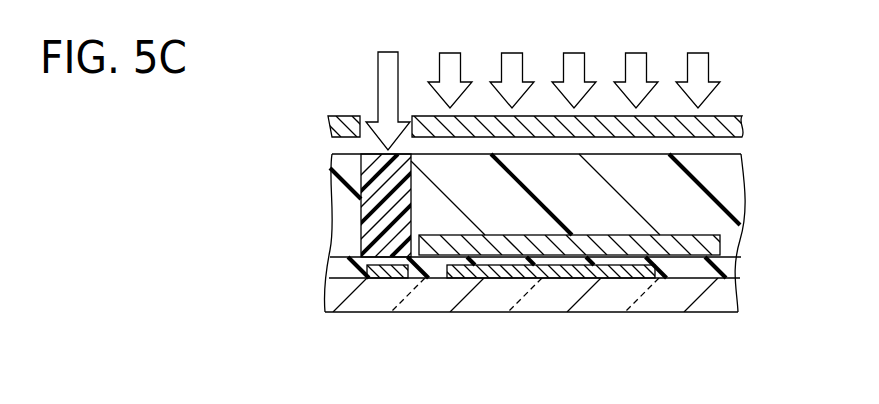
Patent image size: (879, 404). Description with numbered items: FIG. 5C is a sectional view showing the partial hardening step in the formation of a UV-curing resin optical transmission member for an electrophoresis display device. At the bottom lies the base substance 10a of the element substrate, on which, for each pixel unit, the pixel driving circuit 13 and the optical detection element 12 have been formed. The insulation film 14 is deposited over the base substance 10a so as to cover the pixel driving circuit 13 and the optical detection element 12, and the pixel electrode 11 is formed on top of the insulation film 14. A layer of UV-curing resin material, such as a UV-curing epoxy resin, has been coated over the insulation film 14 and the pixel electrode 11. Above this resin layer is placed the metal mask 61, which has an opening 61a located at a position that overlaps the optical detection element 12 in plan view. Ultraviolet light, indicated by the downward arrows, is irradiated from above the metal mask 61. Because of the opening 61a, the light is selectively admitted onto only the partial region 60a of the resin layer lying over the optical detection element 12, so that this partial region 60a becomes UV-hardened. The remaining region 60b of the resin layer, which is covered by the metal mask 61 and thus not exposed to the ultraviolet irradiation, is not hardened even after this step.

The base substance 10a is at (683, 298).
The pixel electrode 11 is at (720, 241).
The optical detection element 12 is at (385, 282).
The pixel driving circuit 13 is at (521, 280).
The insulation film 14 is at (733, 268).
The partial region of the resin material layer 60a is at (364, 221).
The remaining region of the resin material layer 60b is at (733, 193).
The metal mask 61 is at (735, 116).
The opening 61a is at (368, 120).